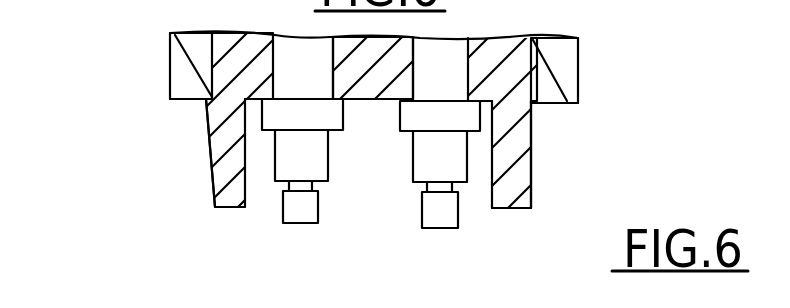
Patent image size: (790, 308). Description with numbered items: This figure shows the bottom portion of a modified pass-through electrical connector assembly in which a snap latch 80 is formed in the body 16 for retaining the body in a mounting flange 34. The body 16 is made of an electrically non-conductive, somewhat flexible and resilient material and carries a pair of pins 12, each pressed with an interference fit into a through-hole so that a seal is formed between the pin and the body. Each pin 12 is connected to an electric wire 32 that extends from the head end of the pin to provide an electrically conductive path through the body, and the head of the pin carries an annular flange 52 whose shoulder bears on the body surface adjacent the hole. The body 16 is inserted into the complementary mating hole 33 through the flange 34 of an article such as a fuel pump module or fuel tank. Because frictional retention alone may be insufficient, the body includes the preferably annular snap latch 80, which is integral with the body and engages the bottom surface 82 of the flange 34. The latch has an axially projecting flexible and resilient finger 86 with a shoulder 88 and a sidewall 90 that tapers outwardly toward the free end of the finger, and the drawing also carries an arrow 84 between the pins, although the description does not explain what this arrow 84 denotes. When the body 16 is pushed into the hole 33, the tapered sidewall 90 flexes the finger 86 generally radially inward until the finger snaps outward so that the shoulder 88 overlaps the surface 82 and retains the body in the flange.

The pin 12 is at (266, 192).
The body 16 is at (241, 64).
The electric wire 32 is at (296, 204).
The mating hole 33 is at (533, 50).
The mounting flange 34 is at (180, 75).
The annular flange 52 is at (331, 116).
The snap latch 80 is at (200, 150).
The bottom surface of the mating flange 82 is at (190, 100).
The gap direction arrow 84 is at (357, 200).
The finger 86 is at (213, 204).
The shoulder 88 is at (531, 103).
The sidewall 90 is at (212, 160).